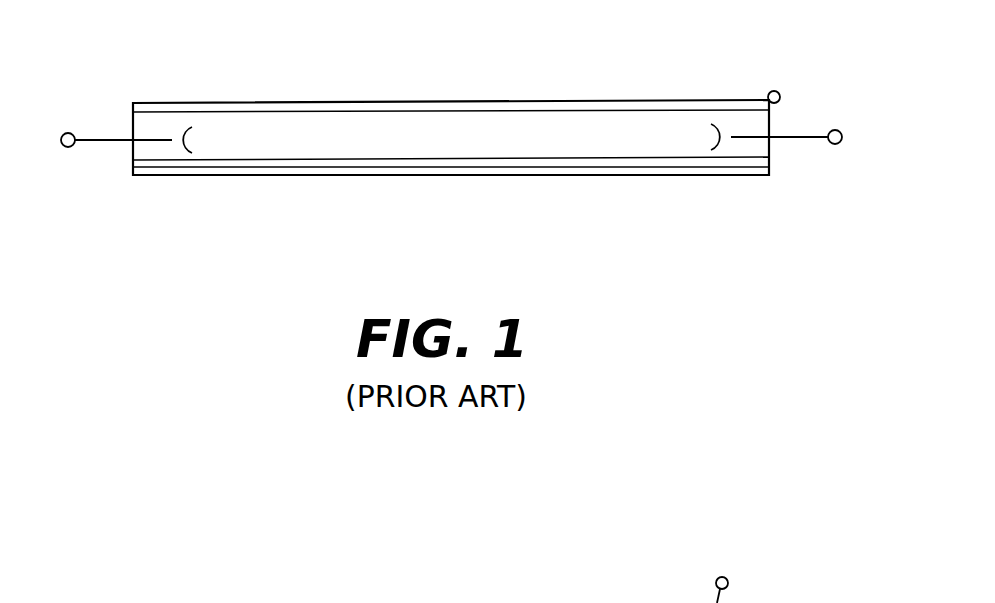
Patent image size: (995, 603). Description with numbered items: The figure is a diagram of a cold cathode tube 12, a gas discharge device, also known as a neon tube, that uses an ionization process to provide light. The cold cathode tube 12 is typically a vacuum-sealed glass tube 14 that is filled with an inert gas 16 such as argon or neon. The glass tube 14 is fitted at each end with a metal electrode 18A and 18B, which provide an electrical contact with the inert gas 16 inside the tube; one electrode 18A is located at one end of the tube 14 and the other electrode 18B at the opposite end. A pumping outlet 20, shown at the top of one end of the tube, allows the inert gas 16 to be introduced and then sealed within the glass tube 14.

The cold cathode tube 12 is at (683, 57).
The glass tube 14 is at (300, 102).
The inert gas 16 is at (498, 123).
The metal electrode 18A is at (172, 142).
The metal electrode 18B is at (732, 137).
The pumping outlet 20 is at (778, 91).